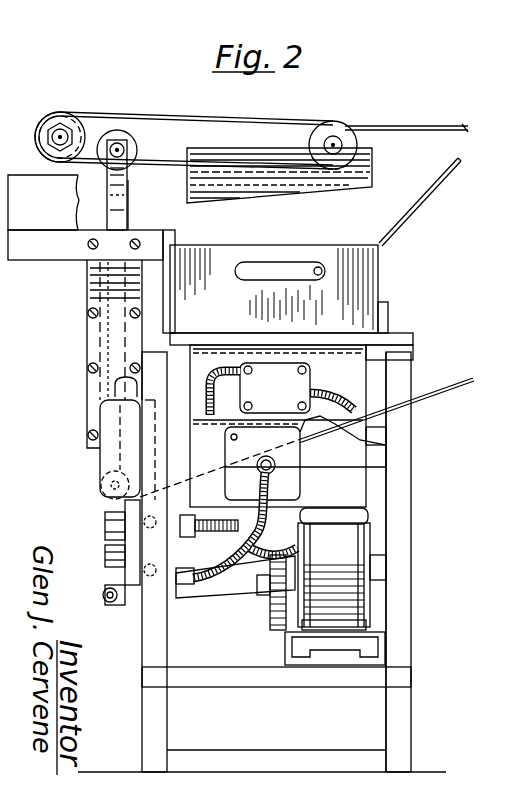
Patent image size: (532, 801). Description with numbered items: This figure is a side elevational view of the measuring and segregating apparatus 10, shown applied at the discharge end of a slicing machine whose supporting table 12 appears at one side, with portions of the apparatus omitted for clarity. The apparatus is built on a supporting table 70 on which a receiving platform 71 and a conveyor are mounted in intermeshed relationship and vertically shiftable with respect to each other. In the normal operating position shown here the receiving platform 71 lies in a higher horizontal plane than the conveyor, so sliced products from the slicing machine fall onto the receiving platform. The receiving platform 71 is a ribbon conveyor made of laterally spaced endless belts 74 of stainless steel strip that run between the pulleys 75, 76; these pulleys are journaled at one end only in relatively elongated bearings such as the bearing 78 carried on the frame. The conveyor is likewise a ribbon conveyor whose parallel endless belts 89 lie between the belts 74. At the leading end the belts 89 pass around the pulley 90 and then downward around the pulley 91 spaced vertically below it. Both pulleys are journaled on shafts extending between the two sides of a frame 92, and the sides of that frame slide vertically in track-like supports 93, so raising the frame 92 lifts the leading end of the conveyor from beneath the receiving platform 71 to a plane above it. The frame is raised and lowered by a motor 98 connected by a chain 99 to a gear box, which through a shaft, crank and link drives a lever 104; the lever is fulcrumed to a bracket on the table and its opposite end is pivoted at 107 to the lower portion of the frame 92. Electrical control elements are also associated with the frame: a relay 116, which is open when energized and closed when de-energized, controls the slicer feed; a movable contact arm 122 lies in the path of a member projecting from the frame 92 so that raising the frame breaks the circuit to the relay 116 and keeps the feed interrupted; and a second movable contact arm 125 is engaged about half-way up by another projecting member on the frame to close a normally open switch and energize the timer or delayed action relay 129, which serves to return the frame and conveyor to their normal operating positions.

The measuring and segregating apparatus 10 is at (374, 106).
The supporting table 12 is at (415, 458).
The supporting table 70 is at (404, 500).
The receiving platform 71 is at (133, 113).
The endless belts 74 is at (245, 126).
The pulley 75 is at (48, 118).
The pulley 76 is at (337, 124).
The bearing 78 is at (398, 128).
The endless belts 89 is at (468, 130).
The pulley 90 is at (138, 149).
The pulley 91 is at (100, 489).
The frame 92 is at (113, 214).
The track-like supports 93 is at (93, 340).
The motor 98 is at (385, 557).
The chain 99 is at (268, 625).
The lever 104 is at (222, 583).
The pivot 107 is at (104, 598).
The relay 116 is at (110, 455).
The movable contact arm 122 is at (107, 561).
The movable contact arm 125 is at (107, 523).
The timer or delayed action relay 129 is at (286, 483).